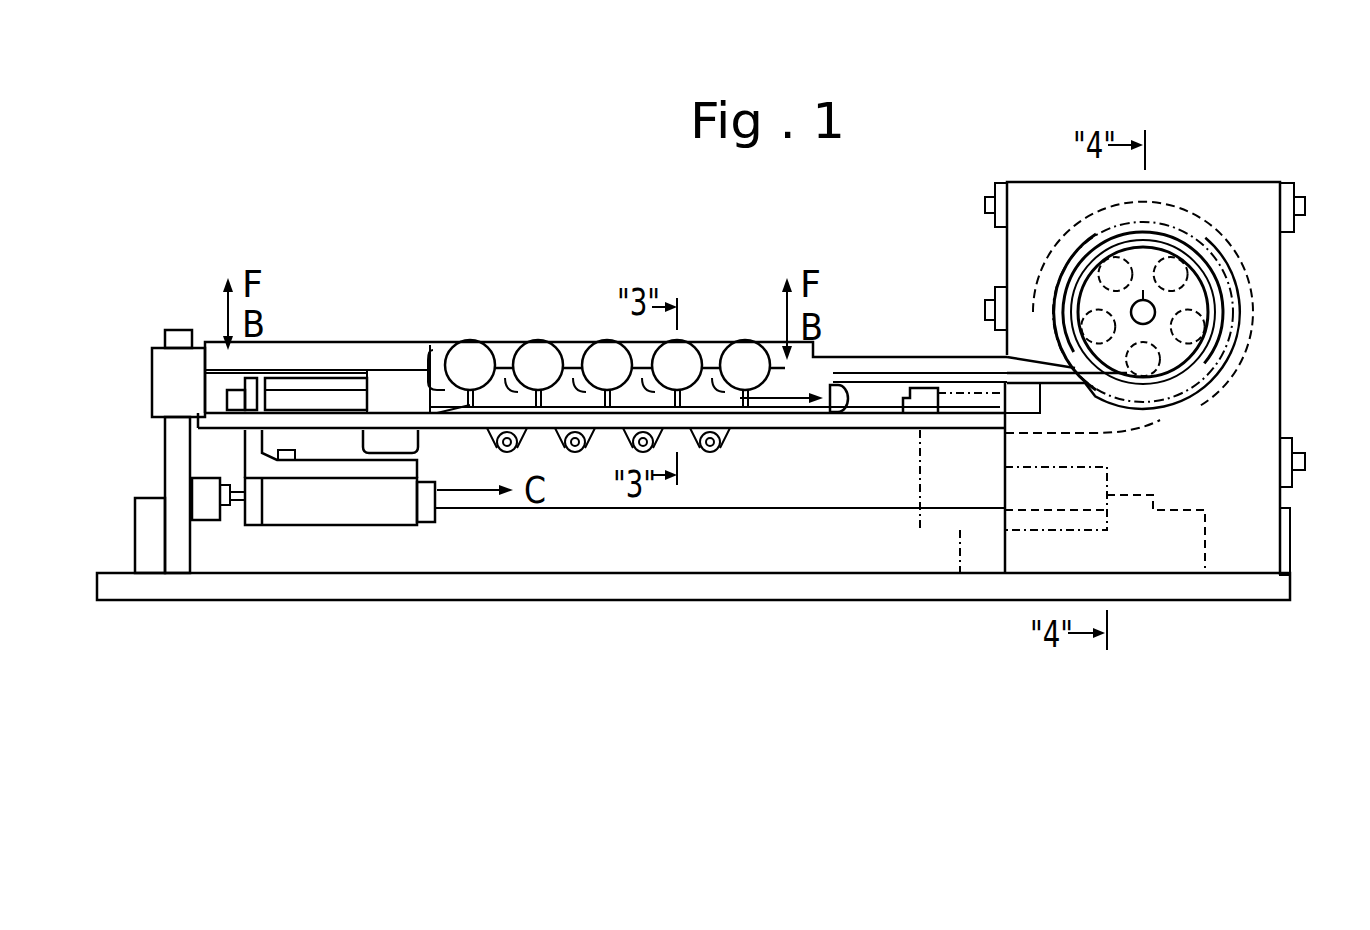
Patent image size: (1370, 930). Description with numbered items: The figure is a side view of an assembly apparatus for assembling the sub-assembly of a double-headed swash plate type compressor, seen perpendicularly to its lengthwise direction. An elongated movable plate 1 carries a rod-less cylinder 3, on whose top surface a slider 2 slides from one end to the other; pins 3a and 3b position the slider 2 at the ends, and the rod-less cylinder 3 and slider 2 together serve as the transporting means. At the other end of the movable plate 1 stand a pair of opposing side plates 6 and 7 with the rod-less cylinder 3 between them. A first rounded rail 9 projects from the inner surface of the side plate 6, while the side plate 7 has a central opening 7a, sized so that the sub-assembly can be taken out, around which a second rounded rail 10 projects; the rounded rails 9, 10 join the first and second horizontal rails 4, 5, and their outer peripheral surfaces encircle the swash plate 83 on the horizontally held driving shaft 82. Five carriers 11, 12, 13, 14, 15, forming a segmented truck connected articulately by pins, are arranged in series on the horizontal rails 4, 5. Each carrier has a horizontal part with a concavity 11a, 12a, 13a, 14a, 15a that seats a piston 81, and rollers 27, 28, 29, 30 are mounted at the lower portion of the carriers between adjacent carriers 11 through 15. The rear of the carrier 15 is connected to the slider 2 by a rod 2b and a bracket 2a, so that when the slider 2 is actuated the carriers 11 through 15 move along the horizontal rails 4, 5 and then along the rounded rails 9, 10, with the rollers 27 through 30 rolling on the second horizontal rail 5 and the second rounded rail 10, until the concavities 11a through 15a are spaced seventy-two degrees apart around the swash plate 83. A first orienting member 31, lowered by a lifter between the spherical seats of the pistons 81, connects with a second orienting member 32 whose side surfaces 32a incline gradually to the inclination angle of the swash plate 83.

The movable plate 1 is at (583, 585).
The slider 2 is at (332, 515).
The bracket 2a is at (380, 475).
The rod 2b is at (287, 403).
The rod-less cylinder 3 is at (743, 563).
The pin 3a is at (237, 490).
The pin 3b is at (1140, 497).
The first horizontal rail 4 is at (875, 400).
The second horizontal rail 5 is at (867, 428).
The side plate 6 is at (997, 340).
The side plate 7 is at (1240, 557).
The opening 7a is at (1078, 252).
The first rounded rail 9 is at (1050, 290).
The second rounded rail 10 is at (1262, 355).
The carrier 11 is at (733, 420).
The concavity 11a is at (716, 378).
The carrier 12 is at (660, 420).
The concavity 12a is at (640, 378).
The carrier 13 is at (587, 433).
The concavity 13a is at (571, 378).
The carrier 14 is at (505, 352).
The concavity 14a is at (513, 352).
The carrier 15 is at (403, 387).
The concavity 15a is at (430, 352).
The roller 27 is at (723, 437).
The roller 28 is at (630, 440).
The roller 29 is at (573, 432).
The roller 30 is at (497, 450).
The first orienting member 31 is at (330, 357).
The second orienting member 32 is at (920, 367).
The side surfaces 32a is at (1058, 385).
The piston 81 is at (468, 357).
The driving shaft 82 is at (1230, 303).
The swash plate 83 is at (1160, 247).